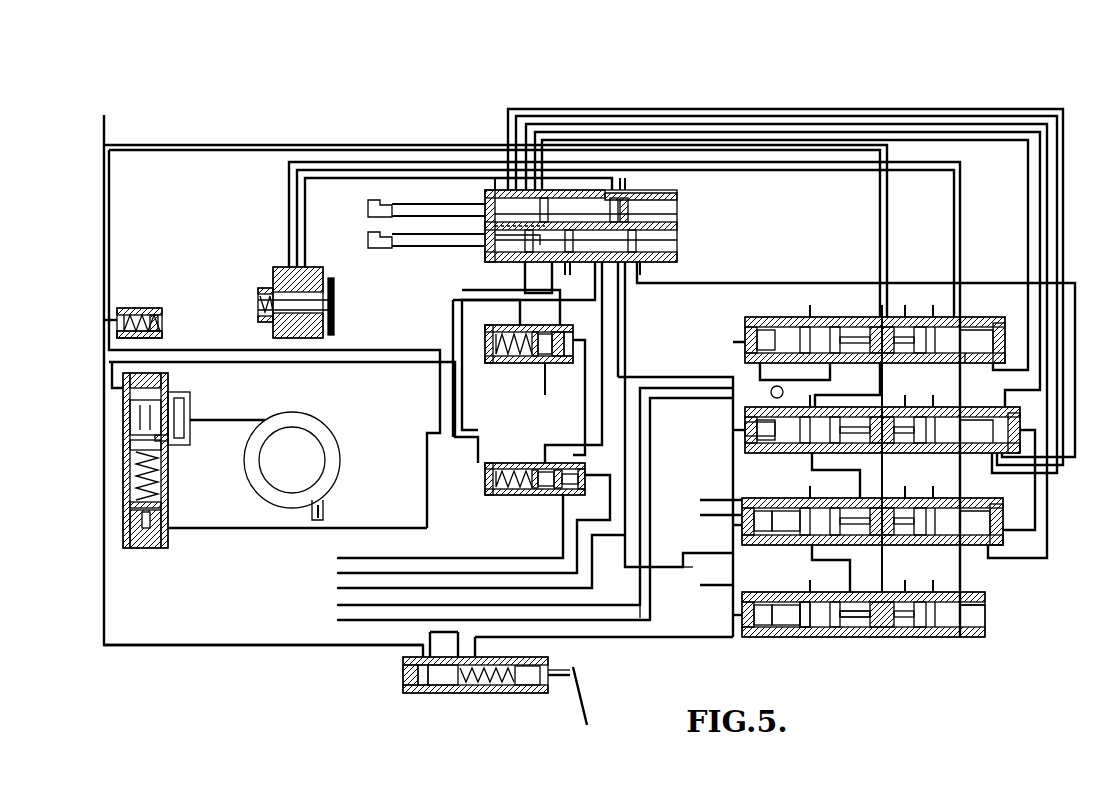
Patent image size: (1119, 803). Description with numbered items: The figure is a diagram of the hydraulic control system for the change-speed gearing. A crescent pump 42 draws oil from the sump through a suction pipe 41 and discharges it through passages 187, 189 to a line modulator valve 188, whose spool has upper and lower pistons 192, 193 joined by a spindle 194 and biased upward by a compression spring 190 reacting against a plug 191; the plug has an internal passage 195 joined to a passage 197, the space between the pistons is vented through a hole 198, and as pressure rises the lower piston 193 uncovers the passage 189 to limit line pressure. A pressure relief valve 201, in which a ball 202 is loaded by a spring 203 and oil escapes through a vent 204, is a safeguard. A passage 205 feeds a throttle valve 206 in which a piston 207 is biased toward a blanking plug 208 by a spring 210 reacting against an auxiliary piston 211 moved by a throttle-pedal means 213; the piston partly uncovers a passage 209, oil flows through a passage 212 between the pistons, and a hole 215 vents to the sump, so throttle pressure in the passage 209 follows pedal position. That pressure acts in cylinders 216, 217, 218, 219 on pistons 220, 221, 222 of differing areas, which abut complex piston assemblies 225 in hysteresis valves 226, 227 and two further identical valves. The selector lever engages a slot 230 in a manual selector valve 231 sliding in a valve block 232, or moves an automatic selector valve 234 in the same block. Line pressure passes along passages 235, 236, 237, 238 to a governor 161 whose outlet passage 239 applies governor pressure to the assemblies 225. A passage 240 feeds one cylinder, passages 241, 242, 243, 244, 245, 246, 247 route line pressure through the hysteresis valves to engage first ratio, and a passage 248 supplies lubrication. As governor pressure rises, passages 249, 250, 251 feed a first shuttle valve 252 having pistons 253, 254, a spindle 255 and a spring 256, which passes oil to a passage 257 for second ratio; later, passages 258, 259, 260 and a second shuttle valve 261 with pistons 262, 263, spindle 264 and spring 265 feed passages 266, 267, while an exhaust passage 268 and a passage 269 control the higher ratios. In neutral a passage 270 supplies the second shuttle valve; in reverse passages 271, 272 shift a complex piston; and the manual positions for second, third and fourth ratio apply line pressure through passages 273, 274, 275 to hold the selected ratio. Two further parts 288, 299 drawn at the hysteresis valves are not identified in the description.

The suction pipe 41 is at (323, 512).
The crescent pump 42 is at (325, 438).
The governor 161 is at (334, 328).
The passage 187 is at (165, 400).
The line modulator valve 188 is at (167, 482).
The passage 189 is at (190, 442).
The helically coiled compression spring 190 is at (165, 502).
The plug 191 is at (135, 548).
The upper piston 192 is at (152, 398).
The lower piston 193 is at (148, 450).
The spindle 194 is at (147, 420).
The internal passage 195 is at (148, 530).
The passage 197 is at (262, 530).
The hole 198 is at (167, 437).
The pressure relief valve 201 is at (163, 335).
The ball 202 is at (125, 308).
The helically coiled compression spring 203 is at (163, 318).
The vent 204 is at (150, 312).
The passage 205 is at (215, 645).
The throttle valve 206 is at (515, 700).
The piston 207 is at (445, 680).
The blanking plug 208 is at (418, 677).
The passage 209 is at (438, 647).
The helically coiled compression spring 210 is at (490, 685).
The auxiliary piston 211 is at (535, 685).
The passage 212 is at (570, 640).
The means movable by the throttle pedal 213 is at (585, 692).
The hole 215 is at (550, 660).
The cylinder 216 is at (755, 637).
The cylinder 217 is at (742, 540).
The cylinder 218 is at (745, 437).
The cylinder 219 is at (745, 325).
The piston 220 is at (787, 640).
The piston 221 is at (792, 523).
The piston 222 is at (748, 420).
The complex piston assembly 225 is at (862, 633).
The hysteresis valve 226 is at (940, 637).
The hysteresis valve 227 is at (975, 545).
The slot 230 is at (368, 207).
The manual selector valve 231 is at (677, 202).
The valve block 232 is at (677, 223).
The automatic selector valve 234 is at (677, 247).
The passage 235 is at (437, 350).
The passage 236 is at (525, 275).
The passage 237 is at (485, 234).
The passage 238 is at (305, 222).
The outlet passage 239 is at (289, 200).
The passage 240 is at (627, 385).
The passage 241 is at (104, 200).
The passage 242 is at (415, 143).
The passage 243 is at (880, 378).
The passage 244 is at (884, 462).
The passage 245 is at (862, 555).
The passage 246 is at (737, 510).
The passage 247 is at (643, 620).
The passage 248 is at (104, 120).
The passage 249 is at (737, 490).
The passage 250 is at (830, 383).
The passage 251 is at (673, 377).
The first shuttle valve 252 is at (487, 333).
The piston 253 is at (500, 362).
The piston 254 is at (560, 360).
The spindle 255 is at (543, 366).
The helically coiled compression spring 256 is at (495, 345).
The passage 257 is at (458, 570).
The passage 258 is at (693, 570).
The passage 259 is at (815, 633).
The passage 260 is at (713, 587).
The second shuttle valve 261 is at (540, 497).
The piston 262 is at (490, 470).
The piston 263 is at (572, 477).
The spindle 264 is at (552, 488).
The helically coiled compression spring 265 is at (487, 492).
The passage 266 is at (575, 545).
The passage 267 is at (485, 480).
The exhaust passage 268 is at (540, 365).
The passage 269 is at (733, 482).
The passage 270 is at (597, 292).
The passage 271 is at (622, 293).
The passage 272 is at (770, 283).
The passage 273 is at (728, 135).
The passage 274 is at (780, 125).
The passage 275 is at (955, 112).
The conduit 288 is at (975, 463).
The chamber 299 is at (965, 365).